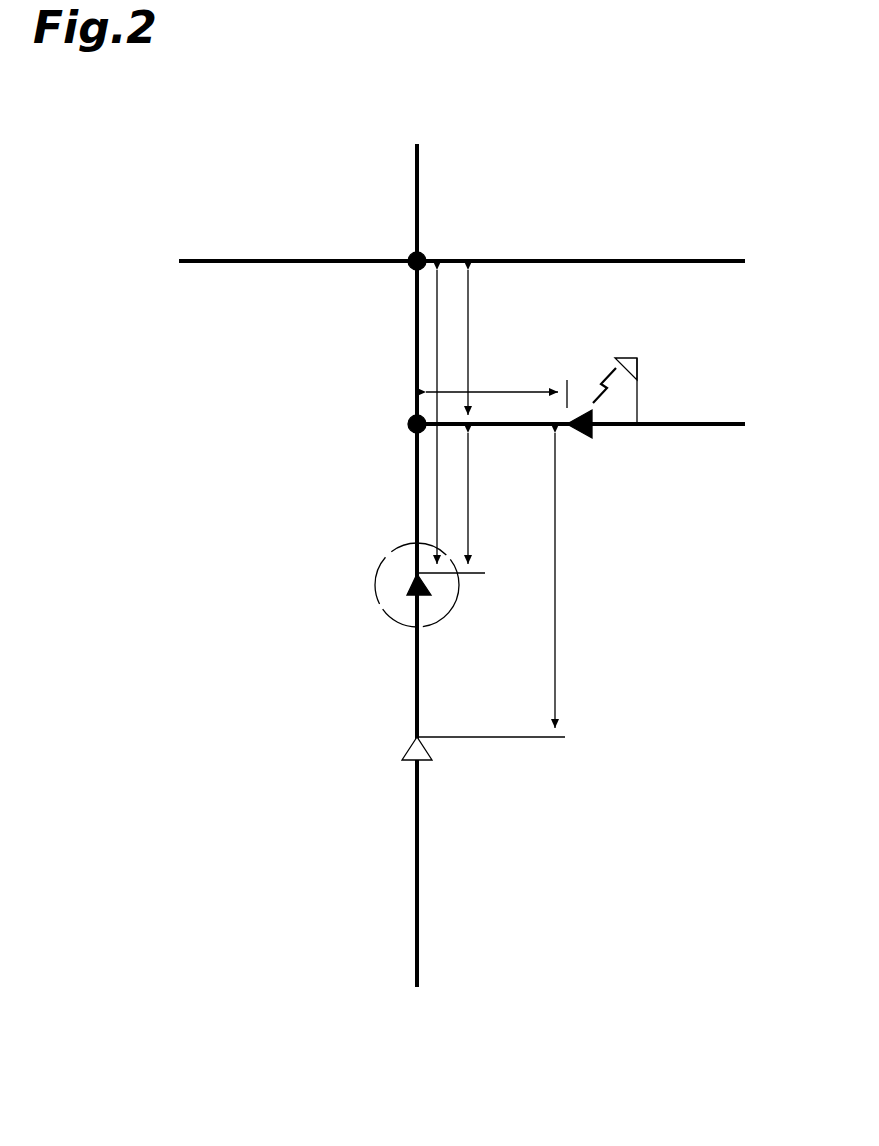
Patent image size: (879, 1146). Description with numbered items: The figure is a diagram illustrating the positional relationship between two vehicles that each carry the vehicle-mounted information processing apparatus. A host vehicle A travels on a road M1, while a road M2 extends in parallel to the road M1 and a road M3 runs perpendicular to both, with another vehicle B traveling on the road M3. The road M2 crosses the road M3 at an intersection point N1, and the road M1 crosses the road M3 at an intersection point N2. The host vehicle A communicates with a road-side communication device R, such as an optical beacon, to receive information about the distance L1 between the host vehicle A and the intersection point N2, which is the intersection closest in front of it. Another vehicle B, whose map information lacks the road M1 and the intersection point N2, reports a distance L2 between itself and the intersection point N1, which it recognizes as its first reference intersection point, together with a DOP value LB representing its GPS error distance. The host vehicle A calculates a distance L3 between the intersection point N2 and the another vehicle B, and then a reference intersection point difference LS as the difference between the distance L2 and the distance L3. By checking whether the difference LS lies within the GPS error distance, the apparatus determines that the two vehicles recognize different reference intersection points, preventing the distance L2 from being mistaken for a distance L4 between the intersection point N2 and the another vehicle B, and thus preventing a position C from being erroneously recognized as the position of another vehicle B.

The intersection point N1 is at (410, 256).
The intersection point N2 is at (408, 424).
The road M1 is at (712, 421).
The road M2 is at (714, 259).
The road M3 is at (419, 853).
The reference intersection point difference LS is at (469, 300).
The distance L1 is at (530, 391).
The distance L2 is at (438, 358).
The distance L3 is at (469, 497).
The distance L4 is at (556, 580).
The vehicle A is at (578, 409).
The road-side communication device R is at (640, 366).
The vehicle B is at (412, 582).
The DOP value LB is at (396, 599).
The position C is at (410, 740).